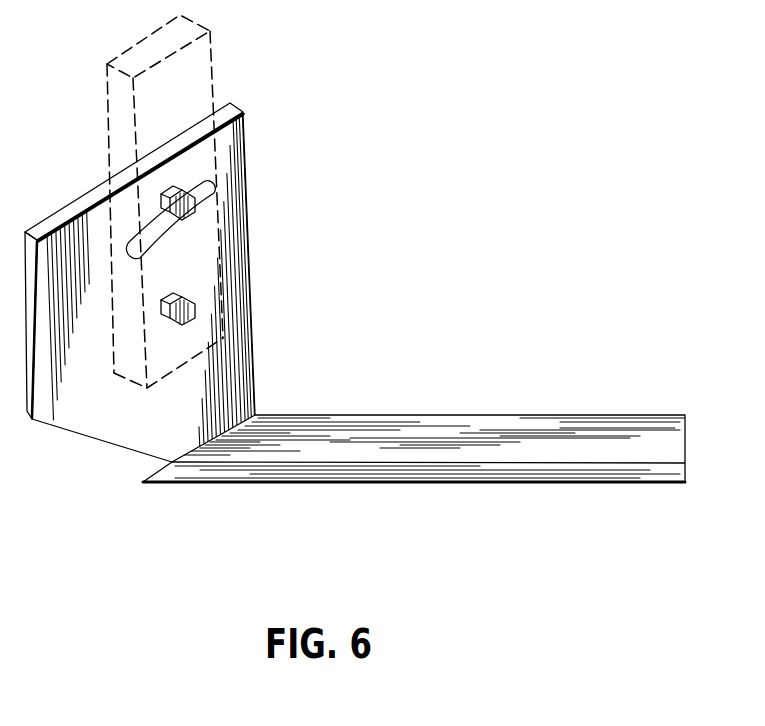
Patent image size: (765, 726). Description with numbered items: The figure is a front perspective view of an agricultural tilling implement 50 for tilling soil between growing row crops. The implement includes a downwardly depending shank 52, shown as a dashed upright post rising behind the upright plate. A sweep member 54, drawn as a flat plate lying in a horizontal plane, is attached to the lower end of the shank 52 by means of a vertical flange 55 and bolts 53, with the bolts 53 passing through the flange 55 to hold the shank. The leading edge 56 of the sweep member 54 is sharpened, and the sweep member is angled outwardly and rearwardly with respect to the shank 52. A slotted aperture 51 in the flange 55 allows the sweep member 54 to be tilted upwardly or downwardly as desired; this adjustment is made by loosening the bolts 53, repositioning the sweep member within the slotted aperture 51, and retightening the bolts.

The agricultural tilling implement 50 is at (357, 204).
The slotted aperture 51 is at (210, 185).
The shank 52 is at (122, 119).
The bolts 53 is at (183, 213).
The sweep member 54 is at (553, 434).
The vertical flange 55 is at (238, 359).
The leading edge 56 is at (450, 483).